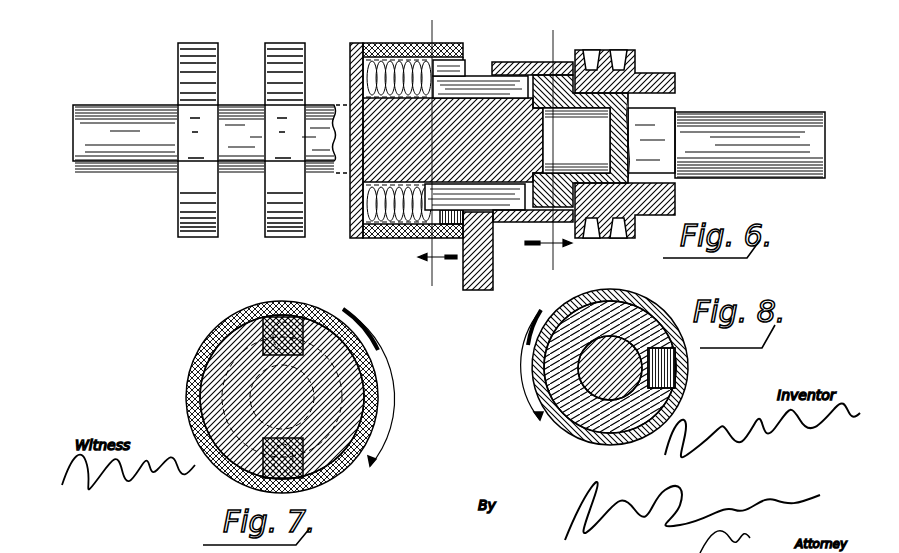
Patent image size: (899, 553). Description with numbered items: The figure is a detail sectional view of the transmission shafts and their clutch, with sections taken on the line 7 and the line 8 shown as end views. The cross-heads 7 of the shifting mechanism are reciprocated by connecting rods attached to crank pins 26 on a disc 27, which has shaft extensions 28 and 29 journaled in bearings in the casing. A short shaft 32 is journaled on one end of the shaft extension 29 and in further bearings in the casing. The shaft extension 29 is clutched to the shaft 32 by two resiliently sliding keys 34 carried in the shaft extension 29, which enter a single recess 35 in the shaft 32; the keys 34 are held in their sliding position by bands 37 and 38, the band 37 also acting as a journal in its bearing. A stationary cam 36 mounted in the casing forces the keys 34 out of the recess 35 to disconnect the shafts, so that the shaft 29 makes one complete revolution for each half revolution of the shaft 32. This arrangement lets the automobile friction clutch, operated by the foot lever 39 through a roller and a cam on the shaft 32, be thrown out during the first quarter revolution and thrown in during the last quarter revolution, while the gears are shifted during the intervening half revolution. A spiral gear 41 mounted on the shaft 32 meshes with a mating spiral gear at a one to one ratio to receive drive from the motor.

In FIG. 6, the cross-head 7 is at (437, 157).
In FIG. 6, the section line 8— 8 is at (549, 152).
In FIG. 6, the crank pin 26 is at (283, 139).
In FIG. 7, the crank pin 26 is at (200, 385).
In FIG. 6, the disc 27 is at (281, 55).
In FIG. 6, the shaft extension 28 is at (119, 114).
In FIG. 7, the shaft extension 28 is at (313, 393).
In FIG. 6, the shaft extension 29 is at (576, 140).
In FIG. 7, the shaft extension 29 is at (237, 344).
In FIG. 8, the shaft extension 29 is at (603, 375).
In FIG. 6, the short shaft 32 is at (545, 80).
In FIG. 8, the short shaft 32 is at (641, 318).
In FIG. 6, the resiliently sliding key 34 is at (470, 85).
In FIG. 7, the resiliently sliding key 34 is at (280, 318).
In FIG. 8, the recess 35 is at (660, 369).
In FIG. 6, the stationary cam 36 is at (470, 290).
In FIG. 6, the band 37 is at (381, 43).
In FIG. 7, the band 37 is at (233, 311).
In FIG. 6, the band 38 is at (503, 53).
In FIG. 8, the band 38 is at (622, 291).
In FIG. 6, the foot lever 39 is at (798, 32).
In FIG. 6, the spiral gear 41 is at (636, 52).